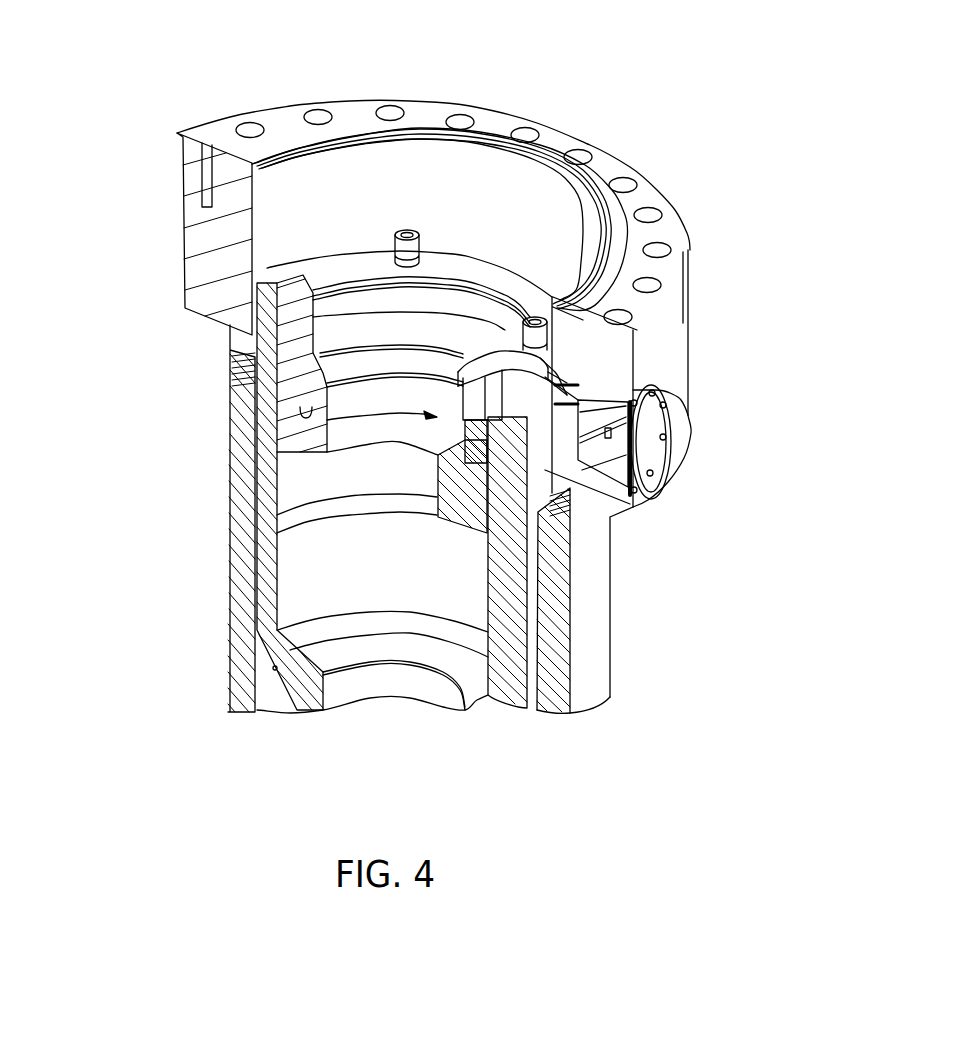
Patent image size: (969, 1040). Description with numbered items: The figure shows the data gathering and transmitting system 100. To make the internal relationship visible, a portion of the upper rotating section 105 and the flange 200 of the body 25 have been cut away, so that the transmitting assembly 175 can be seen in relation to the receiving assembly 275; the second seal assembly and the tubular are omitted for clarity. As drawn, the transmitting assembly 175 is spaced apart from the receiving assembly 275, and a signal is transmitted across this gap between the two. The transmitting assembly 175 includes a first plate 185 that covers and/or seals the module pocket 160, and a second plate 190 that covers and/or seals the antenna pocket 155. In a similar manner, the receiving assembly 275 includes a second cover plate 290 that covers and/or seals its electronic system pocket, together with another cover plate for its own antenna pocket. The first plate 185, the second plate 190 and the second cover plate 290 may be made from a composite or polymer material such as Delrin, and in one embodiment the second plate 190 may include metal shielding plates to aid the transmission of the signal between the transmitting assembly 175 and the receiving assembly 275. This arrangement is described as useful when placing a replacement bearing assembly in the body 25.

The data gathering and transmitting system 100 is at (667, 153).
The first plate 185 is at (492, 352).
The second plate 190 is at (590, 360).
The flange 200 is at (663, 343).
The antenna pocket 155 is at (628, 400).
The module pocket 160 is at (630, 410).
The second cover plate 290 is at (648, 432).
The receiving assembly 275 is at (683, 480).
The body 25 is at (597, 635).
The upper rotating section 105 is at (253, 297).
The transmitting assembly 175 is at (327, 432).